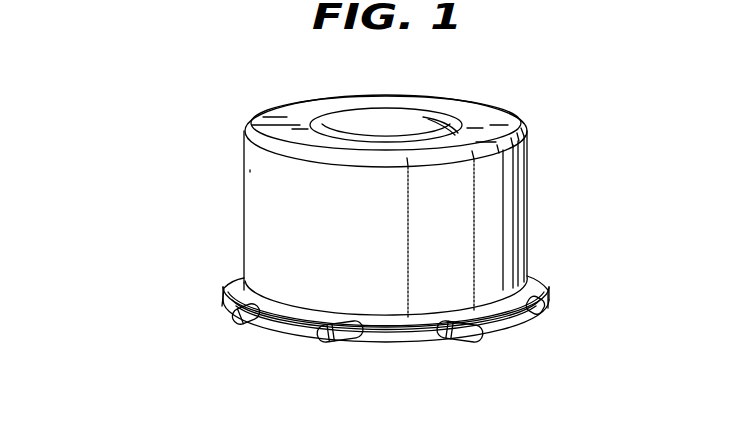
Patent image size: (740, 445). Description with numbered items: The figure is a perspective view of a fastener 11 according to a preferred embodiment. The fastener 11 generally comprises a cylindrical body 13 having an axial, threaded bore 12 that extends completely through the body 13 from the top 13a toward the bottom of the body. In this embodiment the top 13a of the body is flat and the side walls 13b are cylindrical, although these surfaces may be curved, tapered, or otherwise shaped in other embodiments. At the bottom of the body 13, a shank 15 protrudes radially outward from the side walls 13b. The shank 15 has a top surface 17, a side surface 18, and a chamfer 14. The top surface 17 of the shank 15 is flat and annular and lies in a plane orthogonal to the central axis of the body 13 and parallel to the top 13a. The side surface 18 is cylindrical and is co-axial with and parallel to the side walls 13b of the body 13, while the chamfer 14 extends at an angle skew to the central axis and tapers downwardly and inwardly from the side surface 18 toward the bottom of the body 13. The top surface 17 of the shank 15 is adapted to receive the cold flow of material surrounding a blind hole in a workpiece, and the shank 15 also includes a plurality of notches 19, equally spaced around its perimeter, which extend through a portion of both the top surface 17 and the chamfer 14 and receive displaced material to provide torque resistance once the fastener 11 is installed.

The fastener 11 is at (364, 247).
The threaded bore 12 is at (394, 121).
The cylindrical body 13 is at (490, 223).
The top of body 13a is at (490, 123).
The side walls 13b is at (277, 222).
The chamfer 14 is at (403, 350).
The shank 15 is at (565, 320).
The top surface of shank 17 is at (237, 293).
The side surface of shank 18 is at (287, 322).
The notches 19 is at (353, 342).